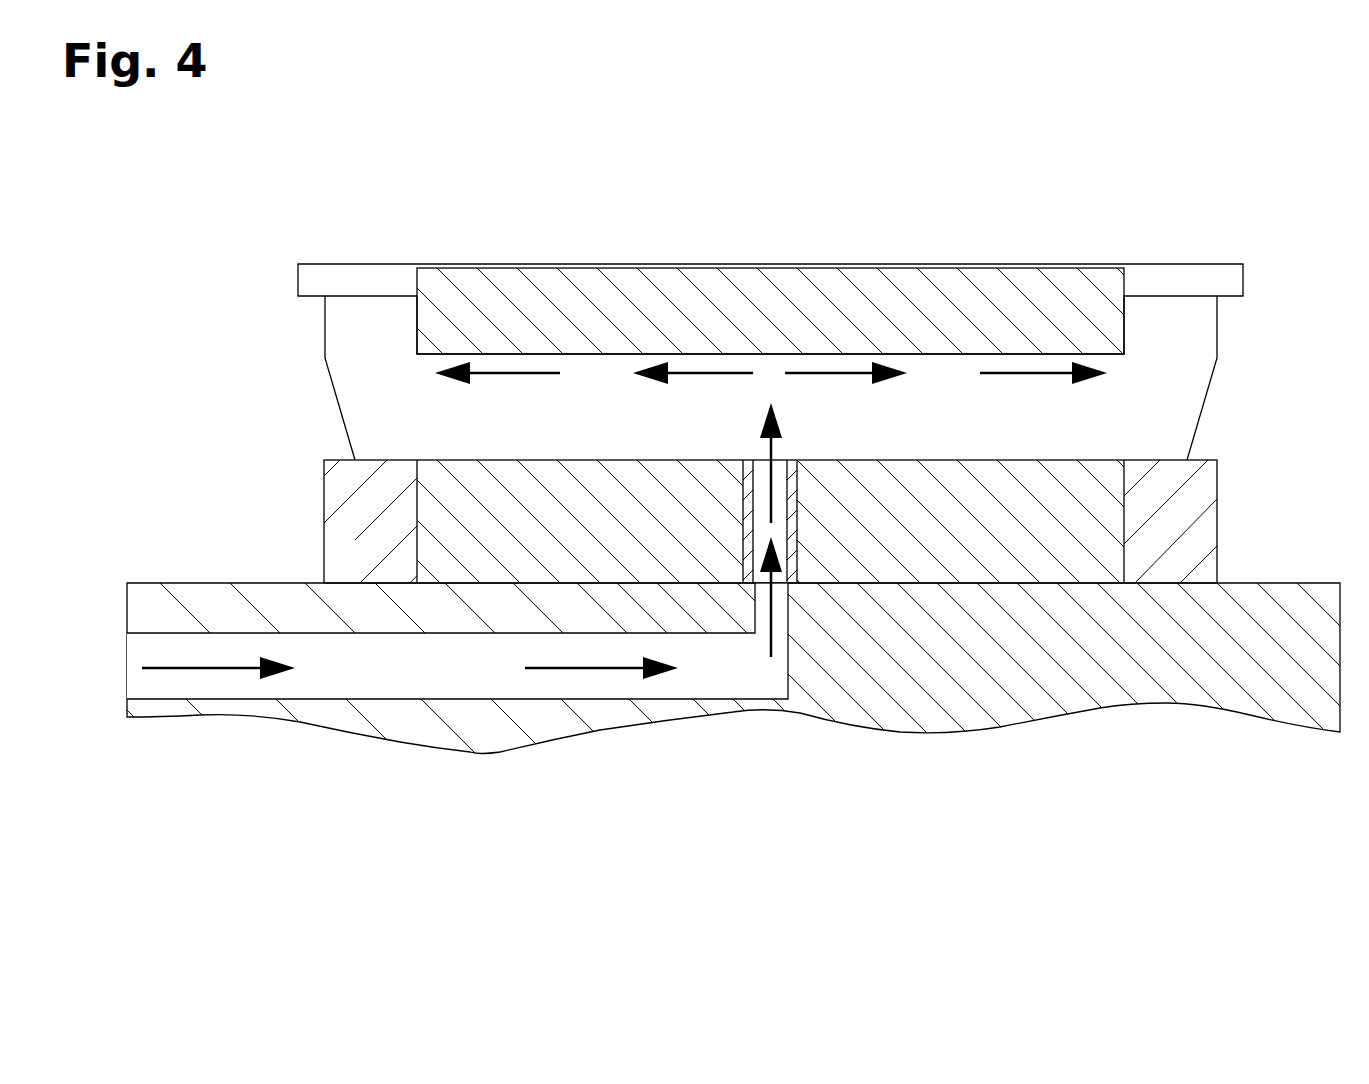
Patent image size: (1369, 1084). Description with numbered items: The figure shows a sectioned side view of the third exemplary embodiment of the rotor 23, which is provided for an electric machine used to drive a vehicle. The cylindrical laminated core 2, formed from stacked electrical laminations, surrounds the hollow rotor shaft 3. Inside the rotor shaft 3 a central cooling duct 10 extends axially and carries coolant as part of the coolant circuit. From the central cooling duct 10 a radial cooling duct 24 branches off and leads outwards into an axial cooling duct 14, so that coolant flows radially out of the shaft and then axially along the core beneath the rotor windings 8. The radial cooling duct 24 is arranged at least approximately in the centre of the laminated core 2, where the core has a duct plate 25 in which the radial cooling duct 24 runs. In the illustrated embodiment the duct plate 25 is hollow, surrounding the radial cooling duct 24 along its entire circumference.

The laminated core 2 is at (490, 488).
The rotor shaft 3 is at (388, 712).
The rotor windings 8 is at (360, 363).
The central cooling duct 10 is at (190, 685).
The axial cooling duct 14 is at (582, 375).
The rotor 23 is at (203, 888).
The radial cooling duct 24 is at (748, 493).
The duct plate 25 is at (793, 493).